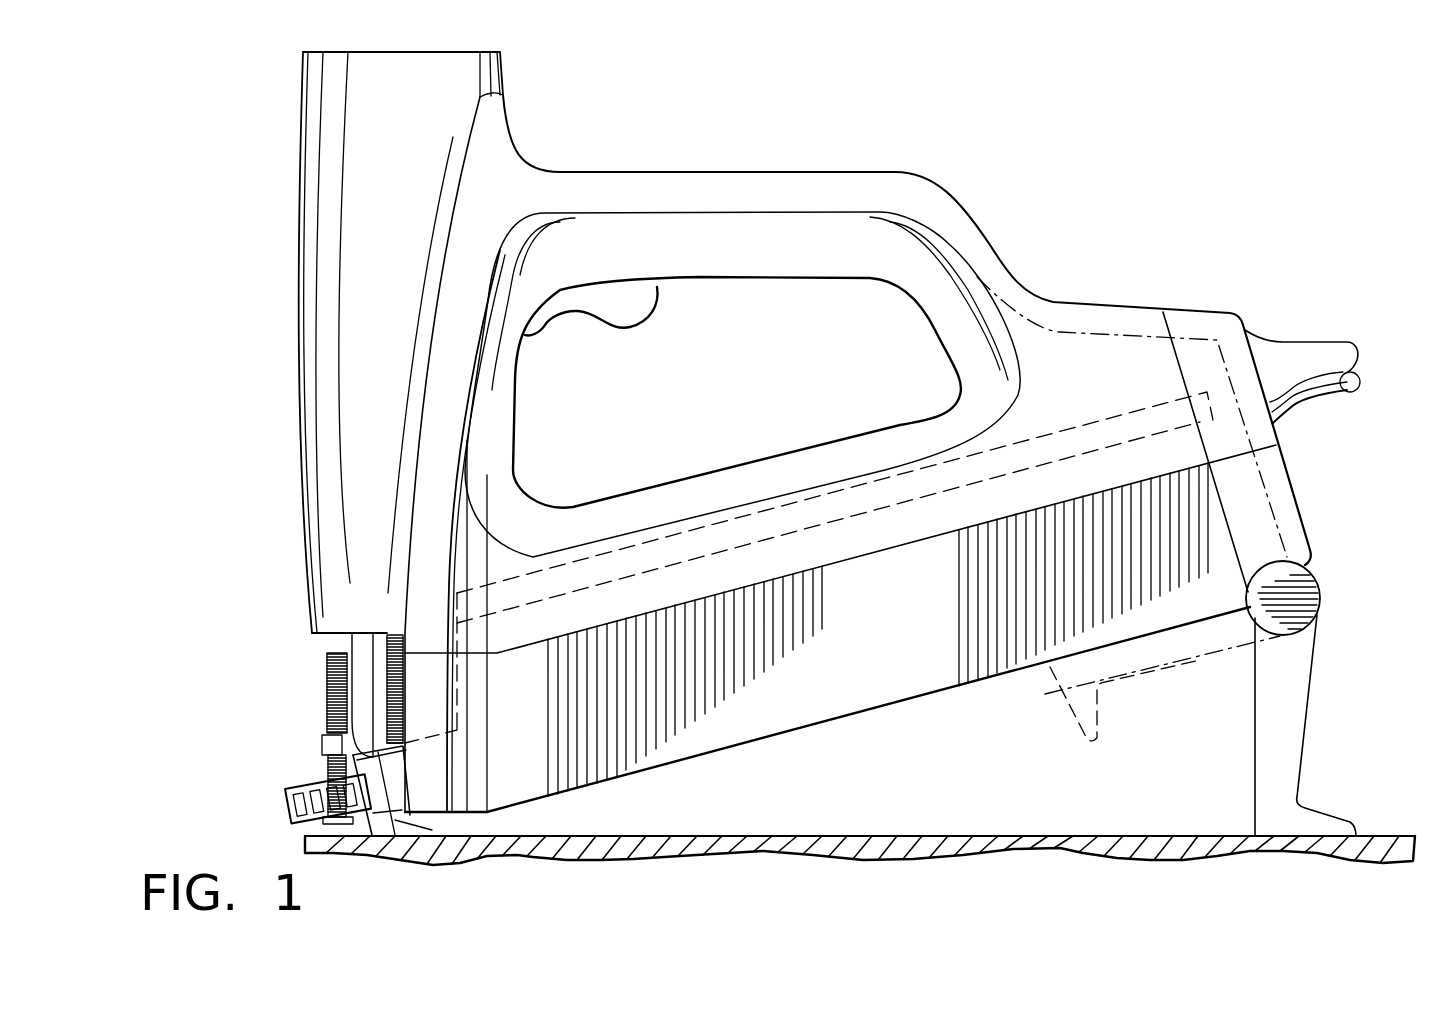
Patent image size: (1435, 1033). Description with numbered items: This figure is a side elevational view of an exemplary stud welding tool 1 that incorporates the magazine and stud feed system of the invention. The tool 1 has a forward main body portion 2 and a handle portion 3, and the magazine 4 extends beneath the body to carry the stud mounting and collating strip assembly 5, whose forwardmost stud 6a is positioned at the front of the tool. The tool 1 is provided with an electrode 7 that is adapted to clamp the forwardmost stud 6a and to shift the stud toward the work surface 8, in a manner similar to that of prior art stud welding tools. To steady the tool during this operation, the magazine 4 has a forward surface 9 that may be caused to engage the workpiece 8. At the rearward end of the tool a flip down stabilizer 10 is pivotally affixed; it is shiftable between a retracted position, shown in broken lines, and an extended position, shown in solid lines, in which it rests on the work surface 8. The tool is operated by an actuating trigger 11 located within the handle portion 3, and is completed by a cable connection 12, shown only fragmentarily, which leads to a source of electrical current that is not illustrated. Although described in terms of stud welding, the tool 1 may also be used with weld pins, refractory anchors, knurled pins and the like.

The stud welding tool 1 is at (1008, 140).
The forward main body portion 2 is at (357, 250).
The handle portion 3 is at (797, 188).
The magazine 4 is at (820, 690).
The stud mounting and collating strip assembly 5 is at (293, 785).
The forwardmost stud 6a is at (327, 688).
The electrode 7 is at (362, 668).
The work surface 8 is at (660, 850).
The forward surface 9 is at (392, 845).
The flip down stabilizer 10 is at (1140, 672).
The actuating trigger 11 is at (603, 315).
The cable connection 12 is at (1297, 360).